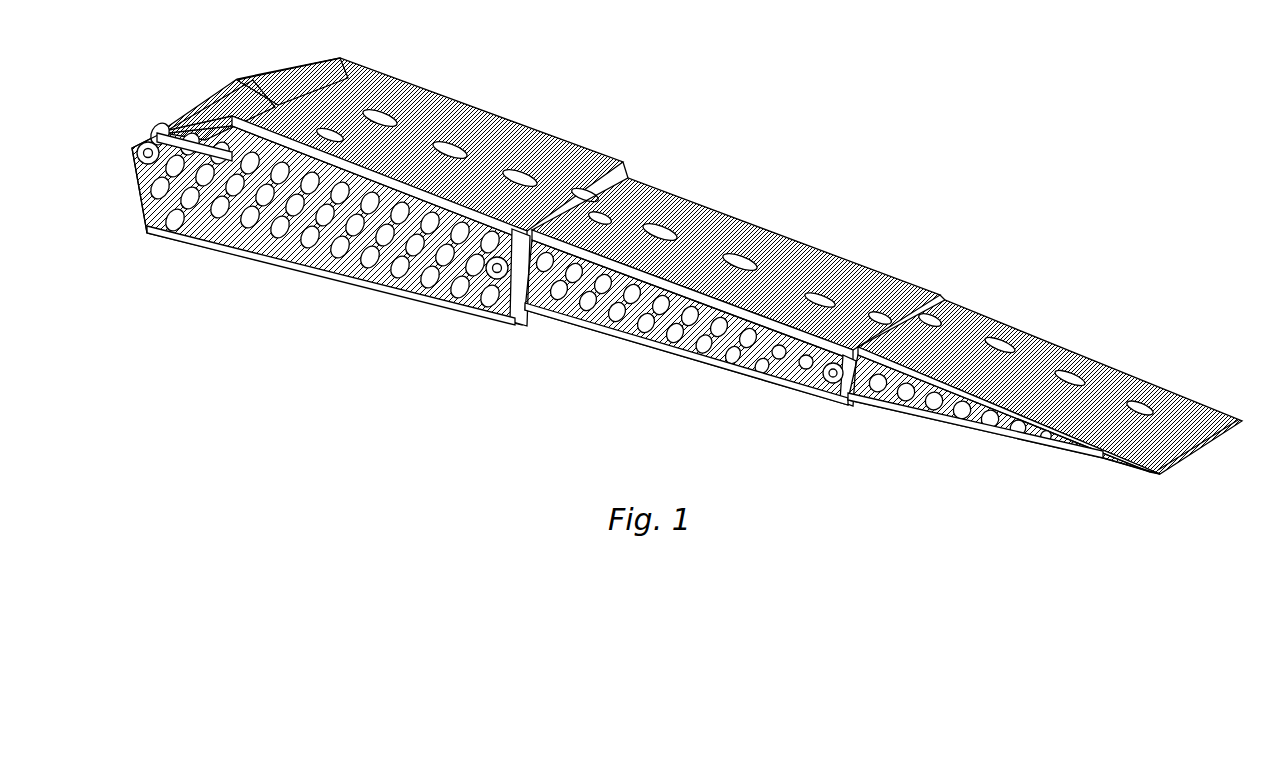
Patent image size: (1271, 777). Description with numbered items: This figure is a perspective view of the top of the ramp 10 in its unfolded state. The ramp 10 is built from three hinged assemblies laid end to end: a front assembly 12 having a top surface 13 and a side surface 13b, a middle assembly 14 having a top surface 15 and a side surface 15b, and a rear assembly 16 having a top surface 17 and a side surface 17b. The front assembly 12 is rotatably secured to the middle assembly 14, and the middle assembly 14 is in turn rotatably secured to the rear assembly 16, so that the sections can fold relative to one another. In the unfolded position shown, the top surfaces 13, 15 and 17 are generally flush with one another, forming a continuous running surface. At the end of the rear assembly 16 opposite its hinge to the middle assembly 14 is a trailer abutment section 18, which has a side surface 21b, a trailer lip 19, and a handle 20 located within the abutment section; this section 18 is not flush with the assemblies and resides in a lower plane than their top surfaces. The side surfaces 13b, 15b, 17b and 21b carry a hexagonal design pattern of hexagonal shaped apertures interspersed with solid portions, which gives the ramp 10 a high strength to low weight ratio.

The ramp 10 is at (686, 248).
The front assembly 12 is at (1045, 395).
The top surface 13 is at (1004, 424).
The side surface 13b is at (1007, 420).
The middle assembly 14 is at (735, 298).
The top surface 15 is at (690, 334).
The side surface 15b is at (747, 353).
The rear assembly 16 is at (379, 187).
The top surface 17 is at (331, 246).
The side surface 17b is at (463, 280).
The trailer abutment section 18 is at (191, 152).
The trailer lip 19 is at (275, 98).
The handle 20 is at (203, 108).
The side surface 21b is at (200, 212).